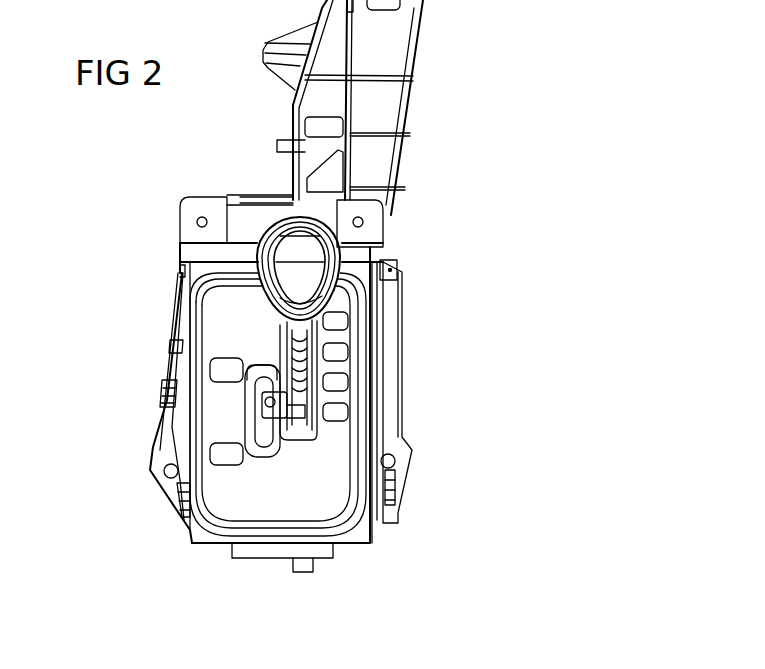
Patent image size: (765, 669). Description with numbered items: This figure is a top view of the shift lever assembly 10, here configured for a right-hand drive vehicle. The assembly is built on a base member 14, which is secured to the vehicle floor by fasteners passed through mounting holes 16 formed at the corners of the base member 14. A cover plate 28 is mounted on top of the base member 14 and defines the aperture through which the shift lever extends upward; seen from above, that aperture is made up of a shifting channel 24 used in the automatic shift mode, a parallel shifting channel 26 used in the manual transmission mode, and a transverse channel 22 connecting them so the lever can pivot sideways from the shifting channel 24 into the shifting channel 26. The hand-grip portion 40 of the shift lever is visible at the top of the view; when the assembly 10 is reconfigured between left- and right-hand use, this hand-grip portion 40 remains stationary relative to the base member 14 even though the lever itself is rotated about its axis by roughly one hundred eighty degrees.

The shift lever assembly 10 is at (375, 566).
The base member 14 is at (387, 515).
The mounting holes 16 is at (197, 222).
The transverse channel 22 is at (301, 420).
The shifting channel 24 is at (300, 373).
The shifting channel 26 is at (263, 443).
The cover plate 28 is at (230, 480).
The hand-grip portion 40 is at (297, 275).